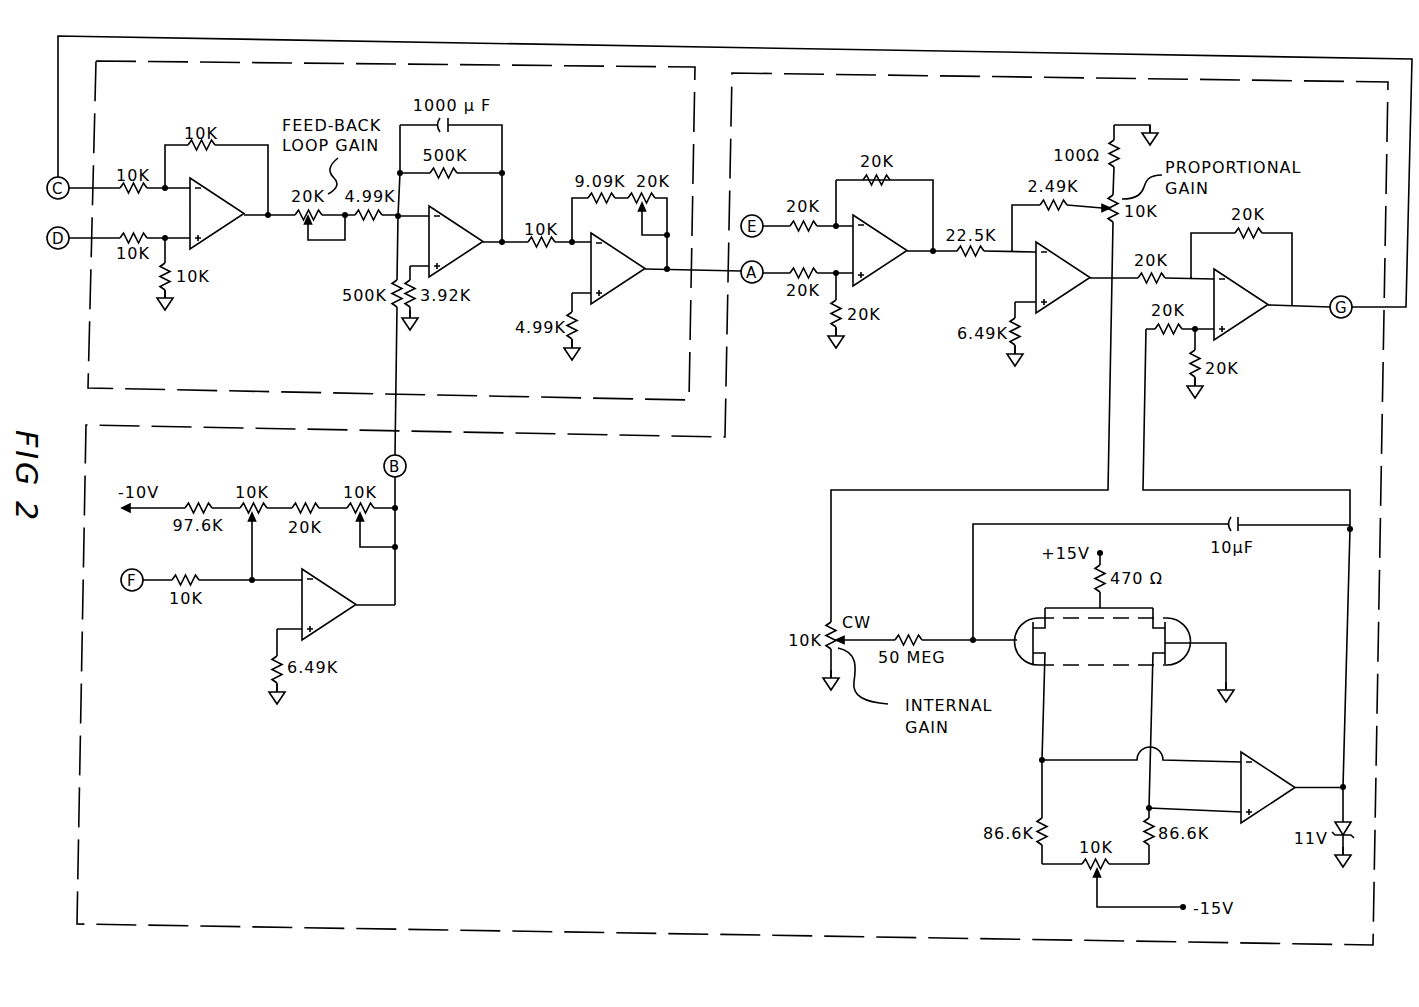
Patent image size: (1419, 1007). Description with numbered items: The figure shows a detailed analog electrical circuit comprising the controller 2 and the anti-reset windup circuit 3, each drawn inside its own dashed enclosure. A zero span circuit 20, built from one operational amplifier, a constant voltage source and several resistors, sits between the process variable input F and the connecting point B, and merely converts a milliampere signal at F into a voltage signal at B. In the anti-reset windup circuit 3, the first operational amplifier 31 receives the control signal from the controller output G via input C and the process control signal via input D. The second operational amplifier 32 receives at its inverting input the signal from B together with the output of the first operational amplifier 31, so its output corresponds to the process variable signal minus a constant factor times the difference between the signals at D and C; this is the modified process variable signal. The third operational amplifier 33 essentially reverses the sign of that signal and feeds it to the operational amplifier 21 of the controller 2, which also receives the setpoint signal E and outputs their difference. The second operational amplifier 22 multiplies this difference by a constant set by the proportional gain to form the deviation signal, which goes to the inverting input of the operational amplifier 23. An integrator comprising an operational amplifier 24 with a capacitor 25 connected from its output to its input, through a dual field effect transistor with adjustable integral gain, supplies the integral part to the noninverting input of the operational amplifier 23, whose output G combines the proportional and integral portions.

The controller 2 is at (1382, 377).
The anti-reset windup circuit 3 is at (92, 336).
The zero span circuit 20 is at (313, 613).
The operational amplifier 21 is at (864, 259).
The second operational amplifier 22 is at (1047, 286).
The operational amplifier 23 is at (1225, 313).
The operational amplifier 24 is at (1252, 796).
The capacitor 25 is at (1256, 514).
The first operational amplifier 31 is at (202, 223).
The second operational amplifier 32 is at (440, 251).
The third operational amplifier 33 is at (601, 278).